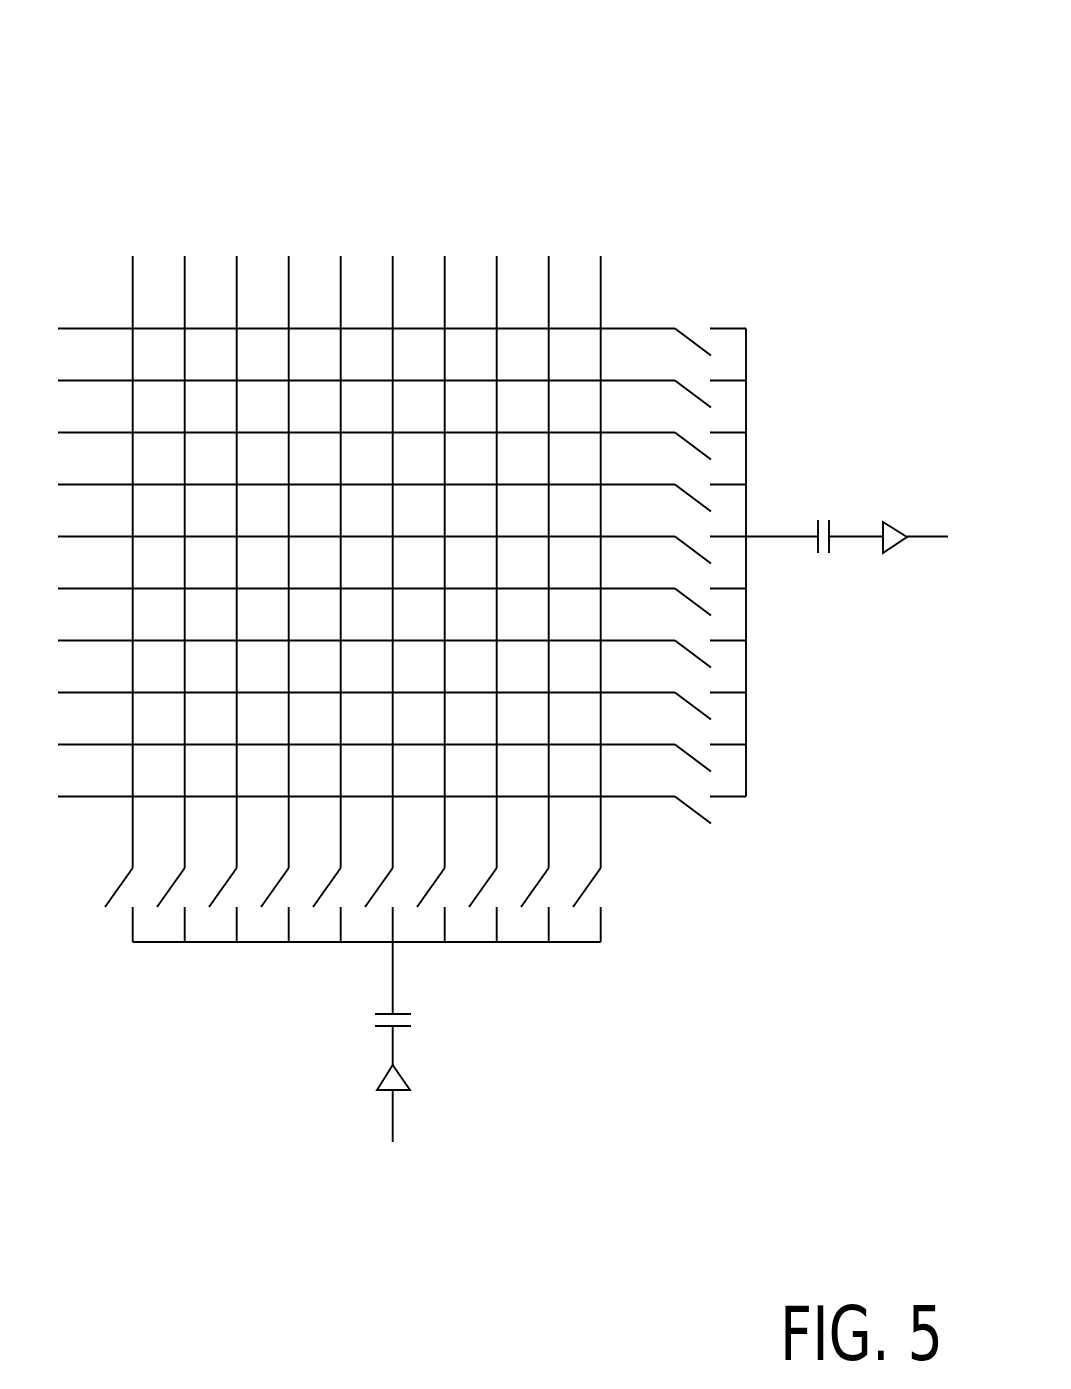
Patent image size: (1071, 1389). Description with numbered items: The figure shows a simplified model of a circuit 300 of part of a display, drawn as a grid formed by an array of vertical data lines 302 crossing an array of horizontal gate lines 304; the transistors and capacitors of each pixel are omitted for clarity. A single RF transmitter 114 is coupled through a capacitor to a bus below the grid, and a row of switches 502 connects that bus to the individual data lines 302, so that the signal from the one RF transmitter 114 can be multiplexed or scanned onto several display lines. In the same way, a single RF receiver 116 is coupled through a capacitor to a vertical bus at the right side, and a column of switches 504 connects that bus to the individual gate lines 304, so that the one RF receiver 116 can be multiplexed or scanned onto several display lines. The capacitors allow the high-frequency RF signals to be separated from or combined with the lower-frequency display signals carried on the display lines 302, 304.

The circuit 300 is at (72, 76).
The data lines 302 is at (133, 259).
The gate lines 304 is at (111, 328).
The RF receiver 116 is at (883, 522).
The RF transmitter 114 is at (400, 1074).
The switches 502 is at (119, 888).
The switches 504 is at (691, 810).